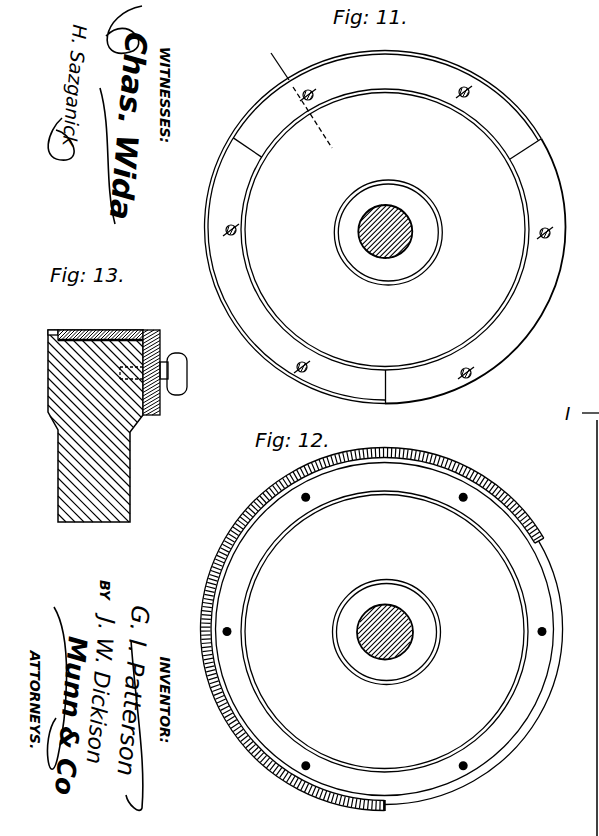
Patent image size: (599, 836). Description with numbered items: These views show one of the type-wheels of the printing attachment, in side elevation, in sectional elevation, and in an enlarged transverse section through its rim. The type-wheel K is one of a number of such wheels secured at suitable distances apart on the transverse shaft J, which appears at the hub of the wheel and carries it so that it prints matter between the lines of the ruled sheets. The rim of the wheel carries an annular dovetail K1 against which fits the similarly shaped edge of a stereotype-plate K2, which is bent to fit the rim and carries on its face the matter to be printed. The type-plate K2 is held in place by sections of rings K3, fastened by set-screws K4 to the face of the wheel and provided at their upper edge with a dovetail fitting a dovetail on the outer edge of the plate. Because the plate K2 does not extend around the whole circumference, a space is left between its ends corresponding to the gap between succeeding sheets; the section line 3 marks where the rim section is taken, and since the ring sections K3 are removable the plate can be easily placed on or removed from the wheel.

In FIG. 11, the type-wheel K is at (385, 229).
In FIG. 12, the type-wheel K is at (384, 631).
In FIG. 13, the type-wheel K is at (48, 393).
In FIG. 12, the annular dovetail K1 is at (503, 757).
In FIG. 13, the annular dovetail K1 is at (48, 331).
In FIG. 11, the stereotype-plate K2 is at (458, 72).
In FIG. 12, the stereotype-plate K2 is at (455, 466).
In FIG. 13, the stereotype-plate K2 is at (128, 330).
In FIG. 11, the sections of rings K3 is at (505, 113).
In FIG. 13, the sections of rings K3 is at (160, 342).
In FIG. 11, the set-screws K4 is at (461, 100).
In FIG. 12, the set-screws K4 is at (309, 760).
In FIG. 13, the set-screws K4 is at (188, 372).
In FIG. 11, the transverse shaft J is at (400, 232).
In FIG. 12, the transverse shaft J is at (402, 623).
In FIG. 11, the section line 3 is at (297, 103).